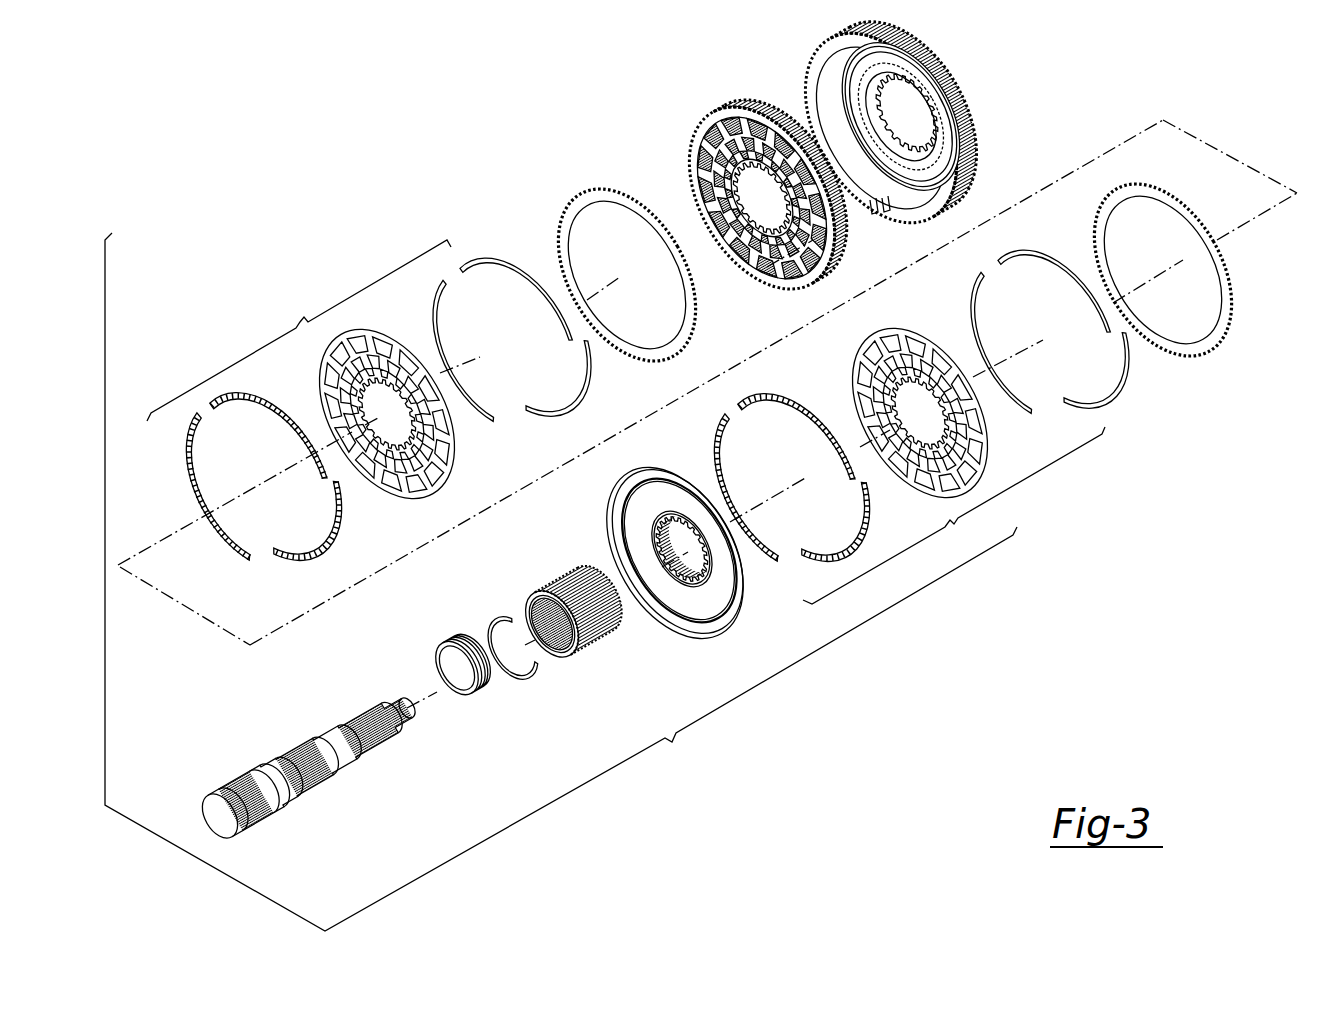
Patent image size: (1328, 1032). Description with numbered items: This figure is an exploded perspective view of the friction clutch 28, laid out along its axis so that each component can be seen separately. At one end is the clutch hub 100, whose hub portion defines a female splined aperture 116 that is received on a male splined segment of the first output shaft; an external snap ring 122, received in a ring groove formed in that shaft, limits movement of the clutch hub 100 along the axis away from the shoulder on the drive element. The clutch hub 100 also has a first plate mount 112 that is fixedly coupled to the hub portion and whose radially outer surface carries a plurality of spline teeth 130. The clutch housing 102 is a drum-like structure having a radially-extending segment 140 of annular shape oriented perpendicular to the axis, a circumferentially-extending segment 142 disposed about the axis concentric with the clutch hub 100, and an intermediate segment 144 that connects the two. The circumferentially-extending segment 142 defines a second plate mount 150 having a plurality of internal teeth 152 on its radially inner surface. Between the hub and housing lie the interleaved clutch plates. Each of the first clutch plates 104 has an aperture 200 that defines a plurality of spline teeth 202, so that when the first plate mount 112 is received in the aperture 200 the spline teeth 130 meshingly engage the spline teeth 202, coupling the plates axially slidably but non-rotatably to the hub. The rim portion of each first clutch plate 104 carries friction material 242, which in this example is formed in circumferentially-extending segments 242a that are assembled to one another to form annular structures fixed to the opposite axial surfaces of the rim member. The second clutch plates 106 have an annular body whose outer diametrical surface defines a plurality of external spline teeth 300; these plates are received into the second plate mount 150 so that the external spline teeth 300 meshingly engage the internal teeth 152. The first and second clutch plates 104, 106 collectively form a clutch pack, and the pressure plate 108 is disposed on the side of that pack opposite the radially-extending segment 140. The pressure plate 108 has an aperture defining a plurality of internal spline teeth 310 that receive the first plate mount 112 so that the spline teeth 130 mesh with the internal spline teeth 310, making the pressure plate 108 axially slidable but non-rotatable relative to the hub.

The friction clutch 28 is at (886, 157).
The clutch hub 100 is at (614, 653).
The clutch housing 102 is at (912, 151).
The first clutch plates 104 is at (626, 422).
The second clutch plates 106 is at (619, 344).
The pressure plate 108 is at (940, 607).
The first plate mount 112 is at (606, 633).
The female splined aperture 116 is at (547, 613).
The external snap ring 122 is at (490, 632).
The spline teeth 130 is at (614, 625).
The radially-extending segment 140 is at (876, 79).
The circumferentially-extending segment 142 is at (944, 140).
The intermediate segment 144 is at (860, 100).
The second plate mount 150 is at (965, 162).
The internal teeth 152 is at (872, 200).
The aperture 200 is at (650, 413).
The spline teeth 202 is at (398, 438).
The friction material 242 is at (633, 390).
The circumferentially-extending segments 242a is at (441, 325).
The external spline teeth 300 is at (917, 273).
The internal spline teeth 310 is at (637, 550).